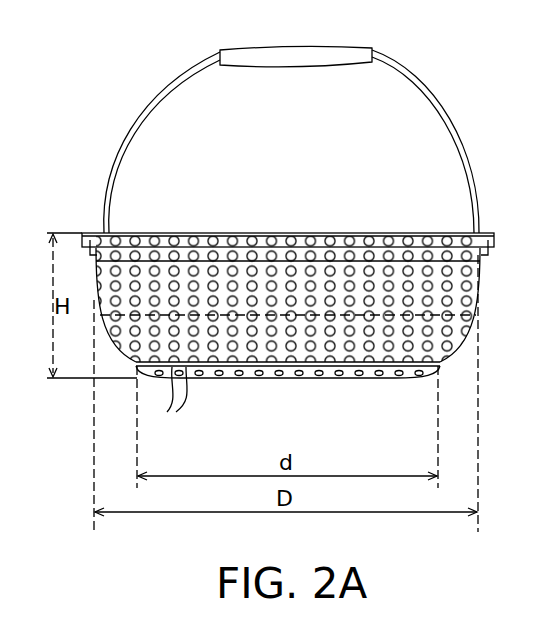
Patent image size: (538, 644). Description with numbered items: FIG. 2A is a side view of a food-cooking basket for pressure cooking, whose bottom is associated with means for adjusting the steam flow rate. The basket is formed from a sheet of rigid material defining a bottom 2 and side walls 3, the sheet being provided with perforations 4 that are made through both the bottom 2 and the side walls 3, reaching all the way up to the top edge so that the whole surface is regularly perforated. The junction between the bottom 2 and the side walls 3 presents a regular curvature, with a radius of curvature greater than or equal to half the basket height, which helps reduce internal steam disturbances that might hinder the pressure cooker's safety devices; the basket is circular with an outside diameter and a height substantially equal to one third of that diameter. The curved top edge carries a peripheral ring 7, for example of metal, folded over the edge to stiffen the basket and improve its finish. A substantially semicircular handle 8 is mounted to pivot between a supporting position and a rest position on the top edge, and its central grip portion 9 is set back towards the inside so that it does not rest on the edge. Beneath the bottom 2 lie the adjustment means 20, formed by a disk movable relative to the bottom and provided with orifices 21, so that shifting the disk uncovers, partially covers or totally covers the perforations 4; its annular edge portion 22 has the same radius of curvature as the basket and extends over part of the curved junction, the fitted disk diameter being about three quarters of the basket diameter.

The bottom 2 is at (310, 232).
The side walls 3 is at (482, 299).
The perforations 4 is at (172, 401).
The peripheral ring 7 is at (497, 232).
The handle 8 is at (433, 98).
The grip portion 9 is at (268, 56).
The adjustment means 20 is at (398, 368).
The orifices 21 is at (334, 368).
The edge portion 22 is at (248, 368).